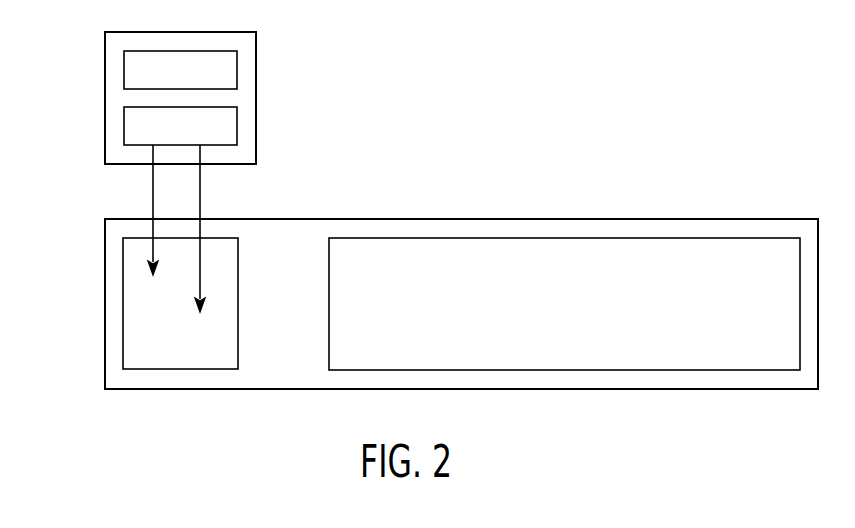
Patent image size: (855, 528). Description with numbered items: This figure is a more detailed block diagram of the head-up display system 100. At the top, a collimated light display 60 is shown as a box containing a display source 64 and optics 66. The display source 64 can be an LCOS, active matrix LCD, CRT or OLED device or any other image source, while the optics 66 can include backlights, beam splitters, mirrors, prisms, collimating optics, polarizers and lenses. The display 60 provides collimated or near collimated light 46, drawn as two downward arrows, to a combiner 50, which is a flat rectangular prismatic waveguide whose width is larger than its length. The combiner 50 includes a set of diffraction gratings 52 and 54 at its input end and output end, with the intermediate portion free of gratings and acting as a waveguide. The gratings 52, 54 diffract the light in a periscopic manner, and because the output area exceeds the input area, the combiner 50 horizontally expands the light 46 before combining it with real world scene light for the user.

The system 100 is at (518, 105).
The collimated light display 60 is at (105, 53).
The display source 64 is at (237, 67).
The optics 66 is at (237, 124).
The collimated light 46 is at (238, 197).
The combiner 50 is at (610, 219).
The diffraction grating 52 is at (238, 253).
The diffraction grating 54 is at (329, 335).